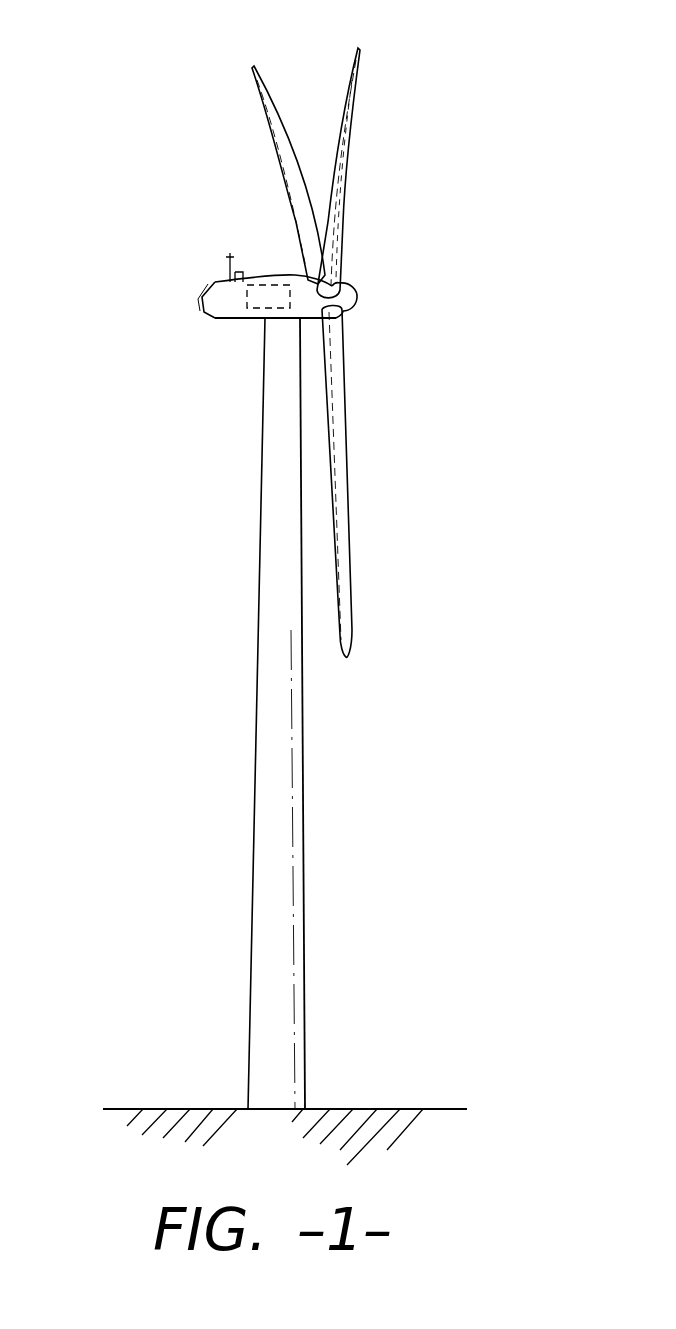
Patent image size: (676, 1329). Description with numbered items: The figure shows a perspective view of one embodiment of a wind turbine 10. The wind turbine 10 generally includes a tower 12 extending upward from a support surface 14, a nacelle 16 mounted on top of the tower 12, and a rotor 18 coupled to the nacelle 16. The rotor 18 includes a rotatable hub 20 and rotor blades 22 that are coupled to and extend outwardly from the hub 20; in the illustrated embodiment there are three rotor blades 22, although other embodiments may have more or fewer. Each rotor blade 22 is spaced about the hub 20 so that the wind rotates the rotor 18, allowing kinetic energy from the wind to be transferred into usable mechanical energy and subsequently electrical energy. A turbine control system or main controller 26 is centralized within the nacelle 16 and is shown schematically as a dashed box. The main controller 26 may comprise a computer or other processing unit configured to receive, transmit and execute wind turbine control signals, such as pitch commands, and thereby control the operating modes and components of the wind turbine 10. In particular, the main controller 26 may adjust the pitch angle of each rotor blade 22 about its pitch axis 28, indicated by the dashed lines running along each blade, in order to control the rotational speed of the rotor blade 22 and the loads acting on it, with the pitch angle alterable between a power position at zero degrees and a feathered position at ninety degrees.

The wind turbine 10 is at (450, 122).
The tower 12 is at (265, 822).
The support surface 14 is at (182, 1108).
The nacelle 16 is at (242, 323).
The rotor 18 is at (360, 275).
The hub 20 is at (355, 302).
The rotor blade 22 is at (353, 88).
The main controller 26 is at (272, 278).
The pitch axis 28 is at (283, 187).